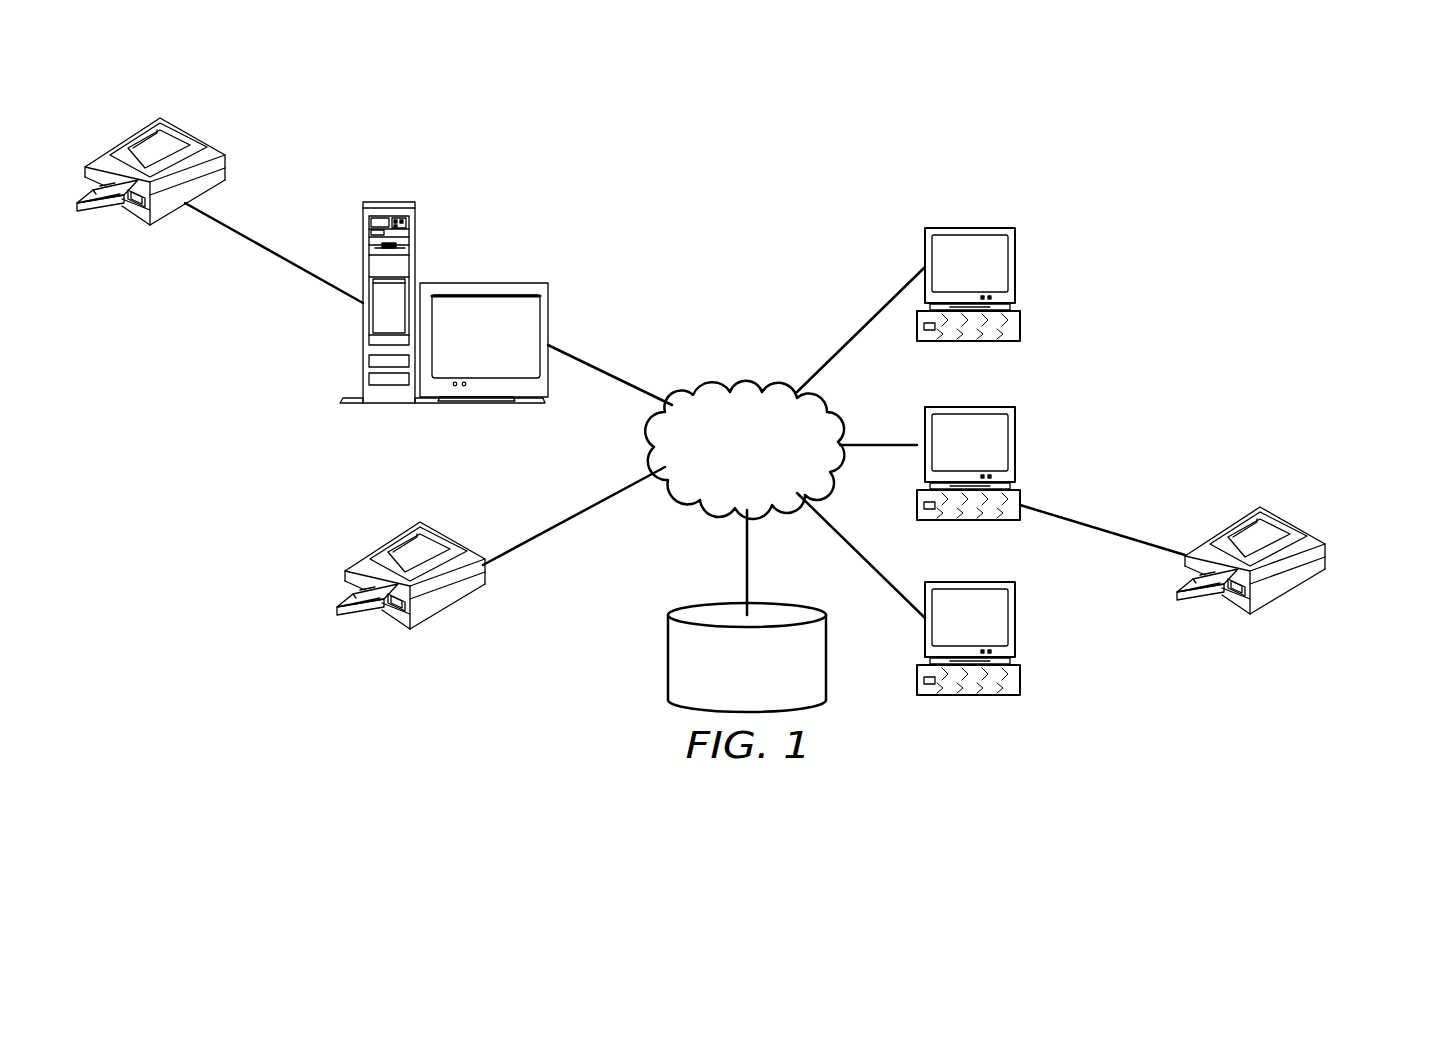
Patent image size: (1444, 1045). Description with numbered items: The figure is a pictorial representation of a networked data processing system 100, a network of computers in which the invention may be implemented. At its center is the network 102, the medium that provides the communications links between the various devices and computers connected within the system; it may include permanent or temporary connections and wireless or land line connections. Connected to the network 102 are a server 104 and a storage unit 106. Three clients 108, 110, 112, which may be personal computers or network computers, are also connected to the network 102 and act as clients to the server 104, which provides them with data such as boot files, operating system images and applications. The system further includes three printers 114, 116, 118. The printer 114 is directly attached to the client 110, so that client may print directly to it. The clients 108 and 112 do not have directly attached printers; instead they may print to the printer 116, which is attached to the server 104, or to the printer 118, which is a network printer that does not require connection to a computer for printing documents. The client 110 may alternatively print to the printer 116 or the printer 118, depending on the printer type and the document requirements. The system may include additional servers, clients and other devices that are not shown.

The networked data processing system 100 is at (680, 249).
The network 102 is at (712, 382).
The server 104 is at (390, 202).
The storage unit 106 is at (665, 668).
The client 108 is at (1015, 266).
The client 110 is at (1015, 445).
The client 112 is at (1015, 620).
The printer 114 is at (1323, 555).
The printer 116 is at (123, 138).
The printer 118 is at (383, 543).